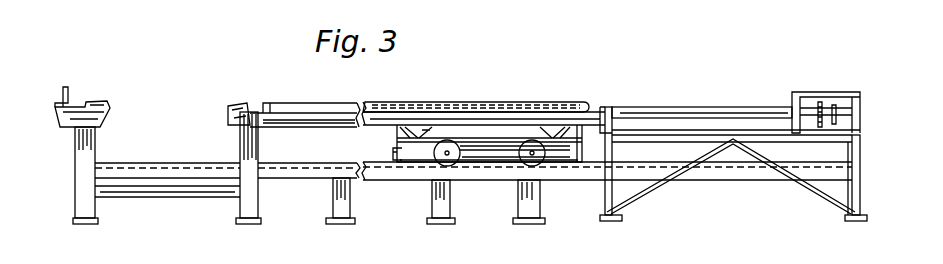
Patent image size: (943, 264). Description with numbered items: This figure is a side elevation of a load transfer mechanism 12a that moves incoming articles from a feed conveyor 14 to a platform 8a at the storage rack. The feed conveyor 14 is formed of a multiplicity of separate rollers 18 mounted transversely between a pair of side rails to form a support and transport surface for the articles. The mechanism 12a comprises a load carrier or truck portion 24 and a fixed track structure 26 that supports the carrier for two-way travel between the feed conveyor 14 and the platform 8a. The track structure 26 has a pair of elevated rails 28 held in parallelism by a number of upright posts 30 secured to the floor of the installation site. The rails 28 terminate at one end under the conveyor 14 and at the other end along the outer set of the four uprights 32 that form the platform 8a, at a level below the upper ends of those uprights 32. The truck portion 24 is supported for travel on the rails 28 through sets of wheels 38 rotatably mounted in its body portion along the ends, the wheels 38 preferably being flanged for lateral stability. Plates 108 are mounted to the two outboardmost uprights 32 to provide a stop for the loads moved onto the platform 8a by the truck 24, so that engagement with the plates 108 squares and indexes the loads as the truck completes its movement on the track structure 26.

The platform 8a is at (130, 111).
The plate 108 is at (76, 68).
The upright 32 is at (77, 148).
The upright post 30 is at (246, 222).
The fixed track structure 26 is at (318, 173).
The load carrier or truck portion 24 is at (385, 141).
The load transfer mechanism 12a is at (519, 92).
The elevated rail 28 is at (418, 169).
The wheel 38 is at (507, 167).
The feed conveyor 14 is at (680, 86).
The roller 18 is at (763, 112).